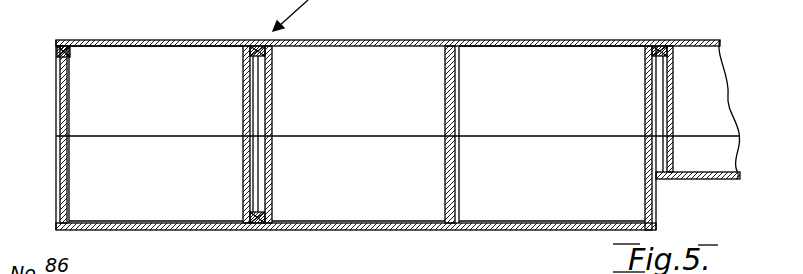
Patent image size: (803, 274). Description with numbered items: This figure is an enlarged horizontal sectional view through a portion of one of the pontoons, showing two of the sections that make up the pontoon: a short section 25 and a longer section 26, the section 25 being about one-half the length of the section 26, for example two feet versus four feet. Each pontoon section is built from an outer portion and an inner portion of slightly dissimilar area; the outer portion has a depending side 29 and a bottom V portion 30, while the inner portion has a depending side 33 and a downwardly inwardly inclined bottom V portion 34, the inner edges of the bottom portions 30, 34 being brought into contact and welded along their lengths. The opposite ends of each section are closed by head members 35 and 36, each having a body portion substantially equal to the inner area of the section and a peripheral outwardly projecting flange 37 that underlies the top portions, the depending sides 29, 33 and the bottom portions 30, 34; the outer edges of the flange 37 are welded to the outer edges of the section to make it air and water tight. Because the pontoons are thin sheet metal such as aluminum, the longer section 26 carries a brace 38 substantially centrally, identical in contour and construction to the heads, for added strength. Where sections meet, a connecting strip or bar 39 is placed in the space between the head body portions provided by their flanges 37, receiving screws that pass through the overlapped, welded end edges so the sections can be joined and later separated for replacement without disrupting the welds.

The pontoon section 25 is at (167, 20).
The pontoon section 26 is at (521, 39).
The depending side 29 is at (153, 231).
The bottom V portion 30 is at (100, 120).
The depending side 33 is at (218, 15).
The bottom V portion 34 is at (177, 152).
The head member 35 is at (71, 97).
The head member 36 is at (242, 113).
The peripheral flange 37 is at (58, 60).
The brace 38 is at (445, 112).
The connecting strip or bar 39 is at (263, 57).